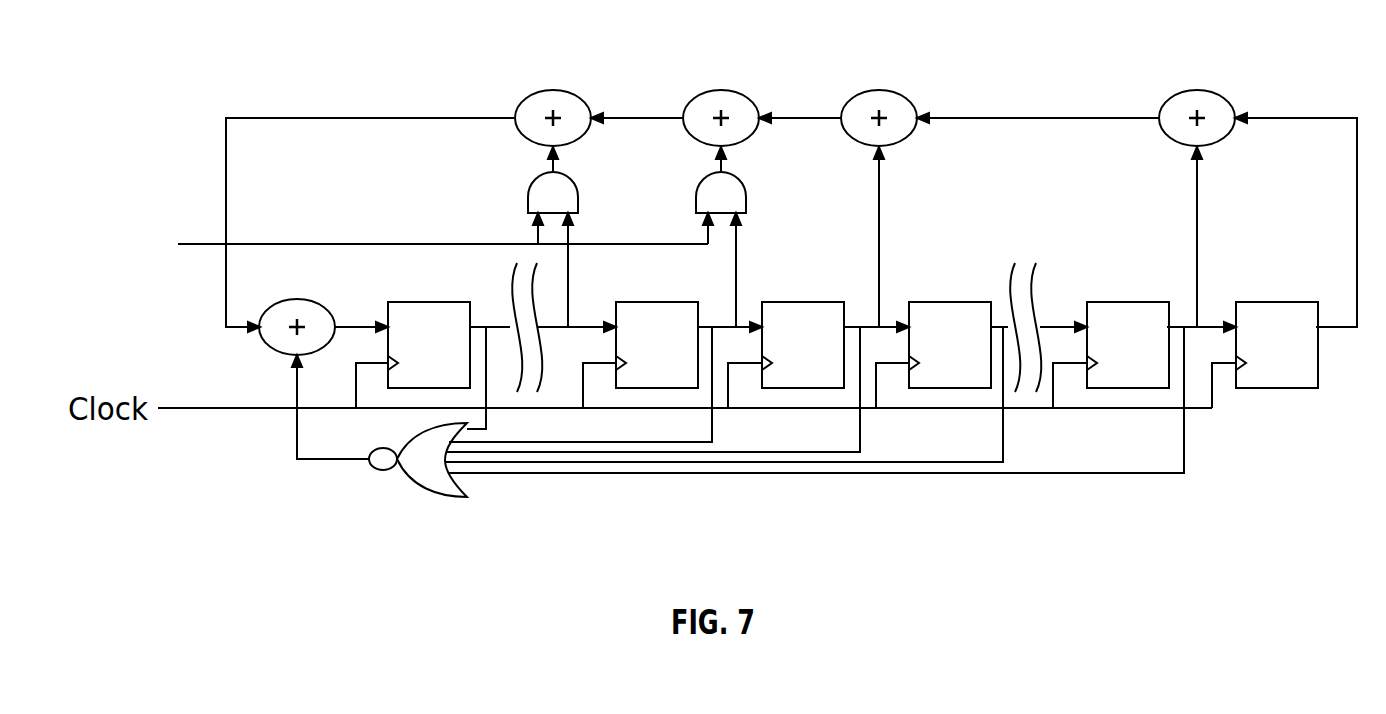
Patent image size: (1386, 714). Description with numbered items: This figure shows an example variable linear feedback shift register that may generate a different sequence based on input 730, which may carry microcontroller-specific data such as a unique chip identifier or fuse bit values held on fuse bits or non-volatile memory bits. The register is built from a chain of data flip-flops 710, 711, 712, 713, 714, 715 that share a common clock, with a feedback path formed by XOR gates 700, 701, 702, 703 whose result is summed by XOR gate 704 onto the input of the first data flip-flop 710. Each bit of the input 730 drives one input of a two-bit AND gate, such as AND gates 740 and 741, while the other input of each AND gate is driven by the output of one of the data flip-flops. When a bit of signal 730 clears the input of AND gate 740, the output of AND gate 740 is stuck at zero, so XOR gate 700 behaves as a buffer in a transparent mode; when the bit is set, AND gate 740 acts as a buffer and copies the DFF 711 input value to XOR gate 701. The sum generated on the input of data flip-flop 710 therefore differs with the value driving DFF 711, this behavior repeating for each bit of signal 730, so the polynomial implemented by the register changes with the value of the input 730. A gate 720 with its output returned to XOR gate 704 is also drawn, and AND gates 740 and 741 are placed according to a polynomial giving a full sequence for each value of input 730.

The XOR gate 700 is at (554, 90).
The XOR gate 701 is at (722, 90).
The XOR gate 702 is at (880, 90).
The XOR gate 703 is at (1198, 90).
The XOR gate 704 is at (273, 352).
The data flip-flop 710 is at (429, 302).
The data flip-flop 711 is at (657, 302).
The data flip-flop 712 is at (811, 302).
The data flip-flop 713 is at (955, 302).
The data flip-flop 714 is at (1125, 302).
The data flip-flop 715 is at (1275, 302).
The NOR gate 720 is at (416, 488).
The input 730 is at (448, 244).
The AND gate 740 is at (528, 196).
The AND gate 741 is at (696, 196).